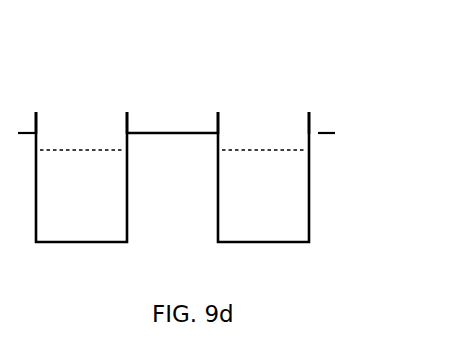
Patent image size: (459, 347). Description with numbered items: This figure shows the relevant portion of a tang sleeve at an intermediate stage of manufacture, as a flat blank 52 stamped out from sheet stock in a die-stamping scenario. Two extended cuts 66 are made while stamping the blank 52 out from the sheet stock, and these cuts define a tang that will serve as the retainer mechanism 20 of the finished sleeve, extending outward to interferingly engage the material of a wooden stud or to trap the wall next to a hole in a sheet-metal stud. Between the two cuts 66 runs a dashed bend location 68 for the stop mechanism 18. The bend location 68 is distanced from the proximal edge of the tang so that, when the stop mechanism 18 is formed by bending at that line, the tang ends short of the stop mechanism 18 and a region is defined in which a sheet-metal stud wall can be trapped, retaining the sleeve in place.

The blank 52 is at (101, 68).
The stop mechanism 18 is at (95, 198).
The retainer mechanism 20 is at (168, 120).
The extended cuts 66 is at (127, 118).
The bend location 68 is at (247, 152).